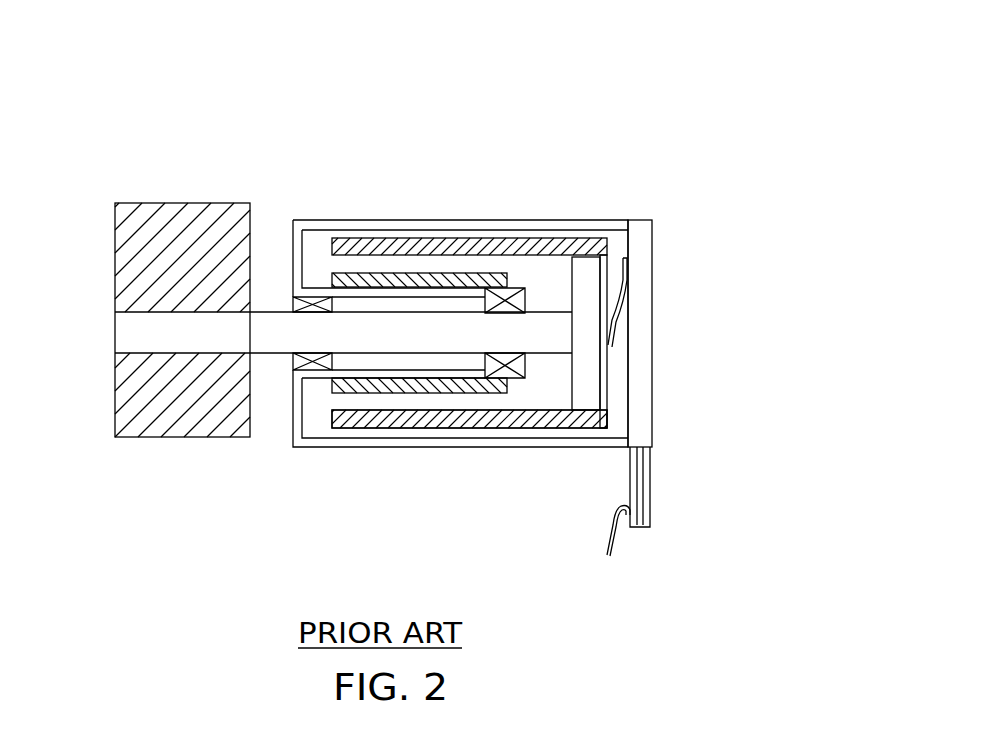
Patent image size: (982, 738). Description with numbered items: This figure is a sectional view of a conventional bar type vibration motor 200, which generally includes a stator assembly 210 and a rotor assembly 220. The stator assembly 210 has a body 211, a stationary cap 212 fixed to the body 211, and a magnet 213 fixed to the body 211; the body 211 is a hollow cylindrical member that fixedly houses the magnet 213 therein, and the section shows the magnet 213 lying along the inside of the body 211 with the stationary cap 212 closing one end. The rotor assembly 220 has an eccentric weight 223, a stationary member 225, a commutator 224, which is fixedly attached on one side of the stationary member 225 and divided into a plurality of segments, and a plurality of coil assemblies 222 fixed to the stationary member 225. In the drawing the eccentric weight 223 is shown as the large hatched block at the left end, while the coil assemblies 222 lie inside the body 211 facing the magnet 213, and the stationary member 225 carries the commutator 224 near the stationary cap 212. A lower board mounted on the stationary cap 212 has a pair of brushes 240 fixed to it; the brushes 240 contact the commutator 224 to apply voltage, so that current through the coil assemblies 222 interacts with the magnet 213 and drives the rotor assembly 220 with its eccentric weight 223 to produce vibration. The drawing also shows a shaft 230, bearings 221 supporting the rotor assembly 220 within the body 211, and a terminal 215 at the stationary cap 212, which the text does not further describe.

The bar type vibration motor 200 is at (278, 142).
The stator assembly 210 is at (393, 133).
The body 211 is at (541, 222).
The stationary cap 212 is at (636, 222).
The magnet 213 is at (386, 278).
The terminal 215 is at (620, 545).
The rotor assembly 220 is at (566, 533).
The bearing 221 is at (291, 372).
The coil assemblies 222 is at (462, 422).
The eccentric weight 223 is at (172, 422).
The commutator 224 is at (605, 400).
The stationary member 225 is at (575, 395).
The shaft 230 is at (115, 338).
The brushes 240 is at (622, 303).